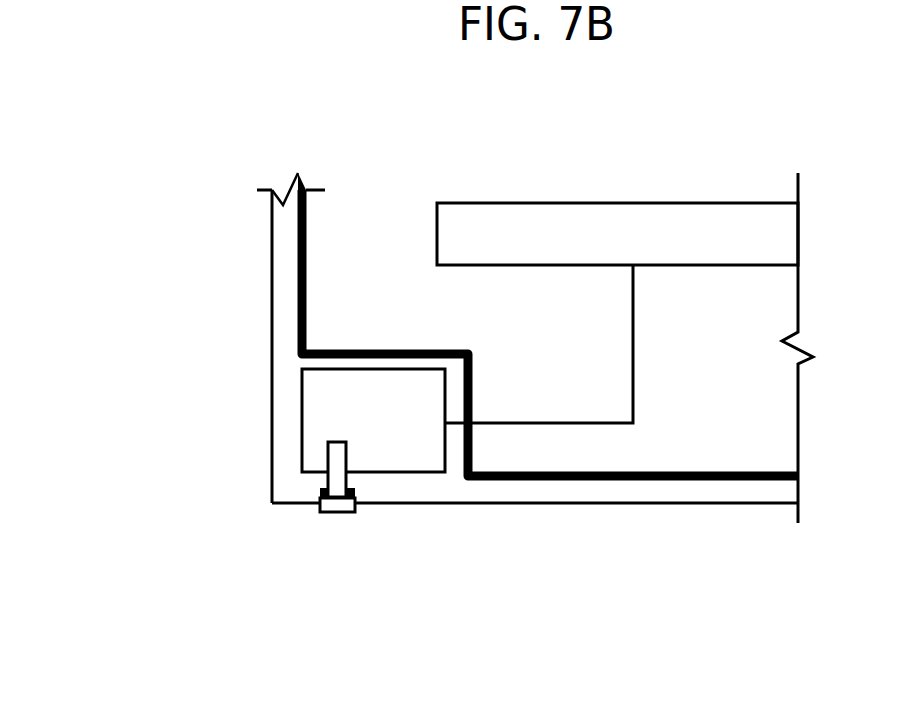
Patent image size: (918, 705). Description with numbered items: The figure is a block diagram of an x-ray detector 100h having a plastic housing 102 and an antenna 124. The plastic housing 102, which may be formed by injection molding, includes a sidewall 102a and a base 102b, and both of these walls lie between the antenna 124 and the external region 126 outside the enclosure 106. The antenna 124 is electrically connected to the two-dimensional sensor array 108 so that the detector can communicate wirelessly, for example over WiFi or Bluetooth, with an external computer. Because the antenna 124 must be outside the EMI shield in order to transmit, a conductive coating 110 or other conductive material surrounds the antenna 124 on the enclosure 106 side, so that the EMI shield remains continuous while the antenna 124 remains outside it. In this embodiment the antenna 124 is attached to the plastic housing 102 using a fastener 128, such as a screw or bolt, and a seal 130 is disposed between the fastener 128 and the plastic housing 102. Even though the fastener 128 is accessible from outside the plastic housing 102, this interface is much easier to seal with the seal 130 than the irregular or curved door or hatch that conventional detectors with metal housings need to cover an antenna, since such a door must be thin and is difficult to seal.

The x-ray detector 100h is at (197, 113).
The plastic housing 102 is at (440, 427).
The sidewall 102a is at (272, 462).
The base 102b is at (272, 504).
The enclosure 106 is at (723, 432).
The two-dimensional sensor array 108 is at (632, 203).
The conductive coating 110 is at (302, 224).
The antenna 124 is at (392, 449).
The external region 126 is at (172, 450).
The fastener 128 is at (330, 513).
The seal 130 is at (355, 492).